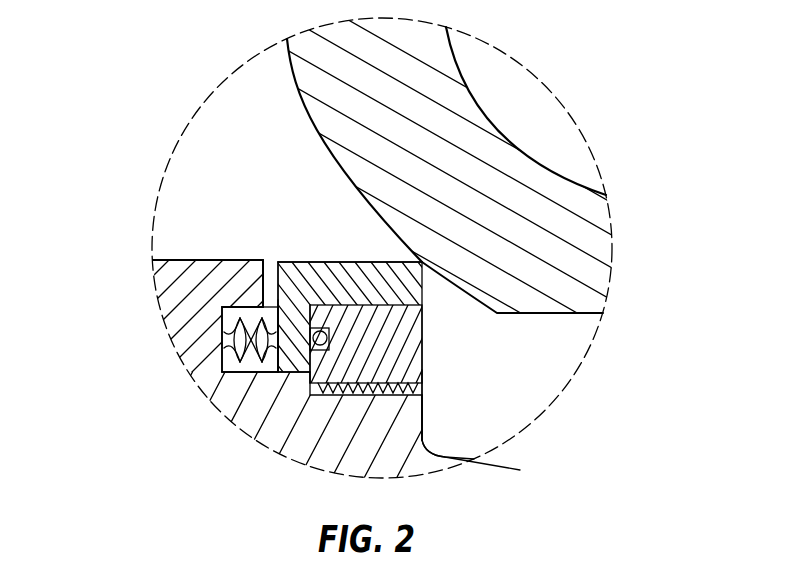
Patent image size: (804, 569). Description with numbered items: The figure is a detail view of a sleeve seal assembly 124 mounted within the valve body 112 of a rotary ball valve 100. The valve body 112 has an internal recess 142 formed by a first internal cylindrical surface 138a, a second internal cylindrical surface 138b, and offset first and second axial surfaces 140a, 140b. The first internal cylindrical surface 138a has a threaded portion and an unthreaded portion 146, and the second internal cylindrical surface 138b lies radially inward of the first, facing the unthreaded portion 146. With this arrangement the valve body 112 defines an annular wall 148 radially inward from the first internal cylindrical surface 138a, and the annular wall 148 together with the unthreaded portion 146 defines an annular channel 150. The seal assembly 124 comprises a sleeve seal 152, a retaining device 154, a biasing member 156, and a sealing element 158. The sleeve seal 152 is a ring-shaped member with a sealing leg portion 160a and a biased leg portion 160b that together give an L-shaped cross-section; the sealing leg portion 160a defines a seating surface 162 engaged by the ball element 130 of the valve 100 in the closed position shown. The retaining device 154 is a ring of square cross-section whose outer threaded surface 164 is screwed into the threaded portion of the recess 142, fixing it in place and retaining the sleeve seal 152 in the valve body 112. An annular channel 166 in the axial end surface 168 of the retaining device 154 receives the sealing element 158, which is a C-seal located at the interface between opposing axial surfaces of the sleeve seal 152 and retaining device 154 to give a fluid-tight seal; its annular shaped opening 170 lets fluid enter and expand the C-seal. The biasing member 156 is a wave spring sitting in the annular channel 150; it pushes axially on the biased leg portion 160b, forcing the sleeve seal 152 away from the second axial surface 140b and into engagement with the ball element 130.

The rotary ball valve 100 is at (208, 283).
The valve body 112 is at (153, 260).
The sleeve seal assembly 124 is at (422, 358).
The ball element 130 is at (317, 78).
The first internal cylindrical surface 138a is at (422, 382).
The second internal cylindrical surface 138b is at (225, 330).
The first axial surface 140a is at (264, 284).
The second axial surface 140b is at (222, 341).
The internal recess 142 is at (264, 258).
The unthreaded portion 146 is at (258, 378).
The annular wall 148 is at (243, 268).
The annular channel 150 is at (222, 308).
The sleeve seal 152 is at (422, 290).
The retaining device 154 is at (422, 333).
The biasing member 156 is at (235, 355).
The sealing element 158 is at (285, 372).
The sealing leg portion 160a is at (383, 262).
The biased leg portion 160b is at (282, 385).
The seating surface 162 is at (427, 262).
The outer threaded surface 164 is at (422, 405).
The annular channel 166 is at (293, 365).
The axial end surface 168 is at (293, 335).
The annular shaped opening 170 is at (316, 352).